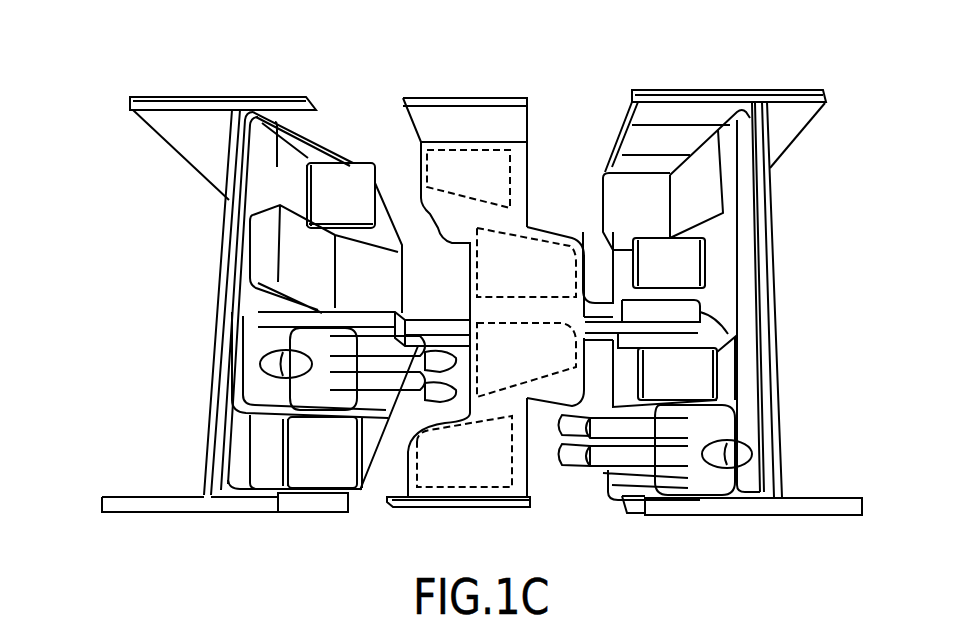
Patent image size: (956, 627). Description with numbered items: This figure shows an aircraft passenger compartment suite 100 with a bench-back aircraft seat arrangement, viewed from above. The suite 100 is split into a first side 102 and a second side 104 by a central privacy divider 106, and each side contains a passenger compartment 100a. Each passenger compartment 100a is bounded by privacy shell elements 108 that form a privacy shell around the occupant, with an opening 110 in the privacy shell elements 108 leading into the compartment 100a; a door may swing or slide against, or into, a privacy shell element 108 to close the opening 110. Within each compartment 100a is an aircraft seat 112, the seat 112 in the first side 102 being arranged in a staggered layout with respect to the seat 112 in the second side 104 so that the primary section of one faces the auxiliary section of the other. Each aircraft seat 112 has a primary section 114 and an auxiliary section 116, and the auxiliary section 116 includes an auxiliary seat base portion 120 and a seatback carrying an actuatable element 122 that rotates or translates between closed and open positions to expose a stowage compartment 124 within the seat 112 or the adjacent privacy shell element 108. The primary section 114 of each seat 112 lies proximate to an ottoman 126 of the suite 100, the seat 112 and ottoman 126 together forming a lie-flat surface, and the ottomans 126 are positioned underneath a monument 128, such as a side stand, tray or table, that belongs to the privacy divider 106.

The aircraft passenger compartment suite 100 is at (112, 33).
The passenger compartment 100a is at (371, 70).
The first side 102 is at (440, 70).
The second side 104 is at (437, 521).
The privacy divider 106 is at (509, 82).
The privacy shell element 108 is at (231, 98).
The opening 110 is at (351, 102).
The aircraft seat 112 is at (413, 300).
The primary section 114 is at (260, 252).
The auxiliary section 116 is at (285, 171).
The auxiliary seat base portion 120 is at (383, 217).
The actuatable element 122 is at (358, 206).
The stowage compartment 124 is at (294, 190).
The ottoman 126 is at (487, 186).
The monument 128 is at (528, 470).